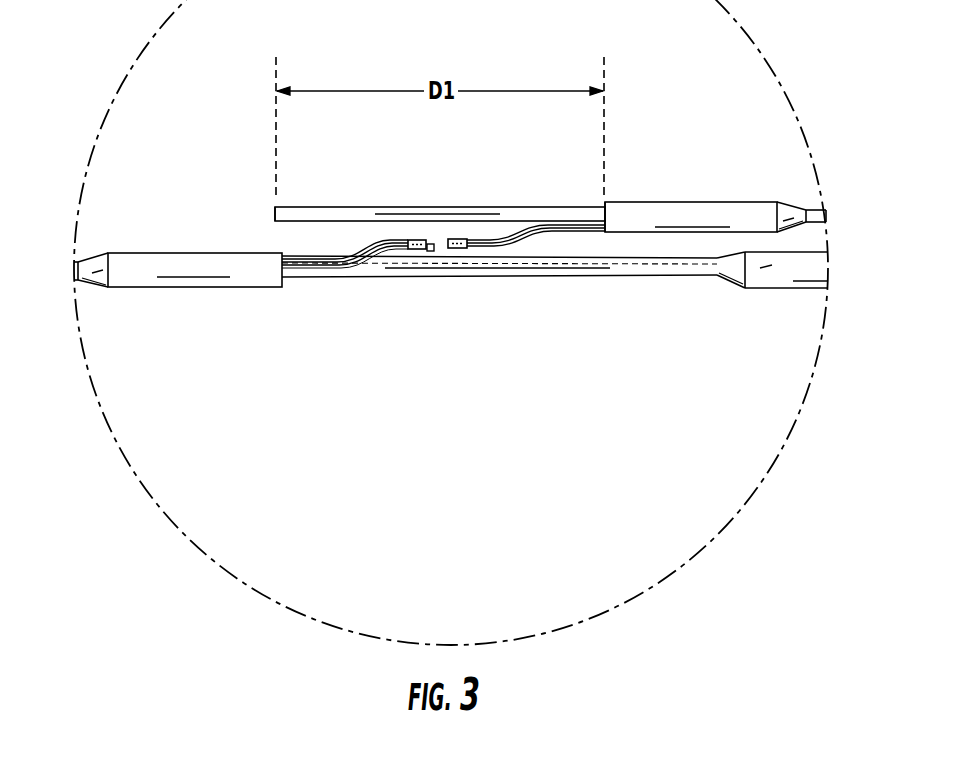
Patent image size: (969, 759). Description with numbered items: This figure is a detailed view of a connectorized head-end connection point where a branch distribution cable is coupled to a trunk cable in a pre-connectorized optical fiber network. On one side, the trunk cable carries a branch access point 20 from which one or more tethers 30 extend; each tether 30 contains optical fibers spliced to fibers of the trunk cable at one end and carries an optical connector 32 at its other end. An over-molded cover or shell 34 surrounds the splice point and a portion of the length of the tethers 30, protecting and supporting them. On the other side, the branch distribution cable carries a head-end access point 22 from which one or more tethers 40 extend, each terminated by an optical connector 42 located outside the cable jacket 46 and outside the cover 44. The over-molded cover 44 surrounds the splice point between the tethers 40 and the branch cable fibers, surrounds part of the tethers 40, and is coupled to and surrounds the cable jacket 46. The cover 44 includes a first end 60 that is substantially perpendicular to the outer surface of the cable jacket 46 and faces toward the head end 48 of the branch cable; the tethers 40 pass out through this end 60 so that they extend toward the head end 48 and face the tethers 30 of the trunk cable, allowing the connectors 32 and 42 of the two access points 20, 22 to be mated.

The branch access point 20 is at (450, 319).
The head-end access point 22 is at (531, 155).
The tether 30 is at (370, 256).
The optical connector 32 is at (431, 252).
The over-molded cover 34 is at (187, 280).
The tether 40 is at (528, 233).
The optical connector 42 is at (460, 238).
The over-molded cover 44 is at (720, 210).
The cable jacket 46 is at (421, 178).
The head end 48 is at (266, 206).
The first end 60 is at (598, 200).